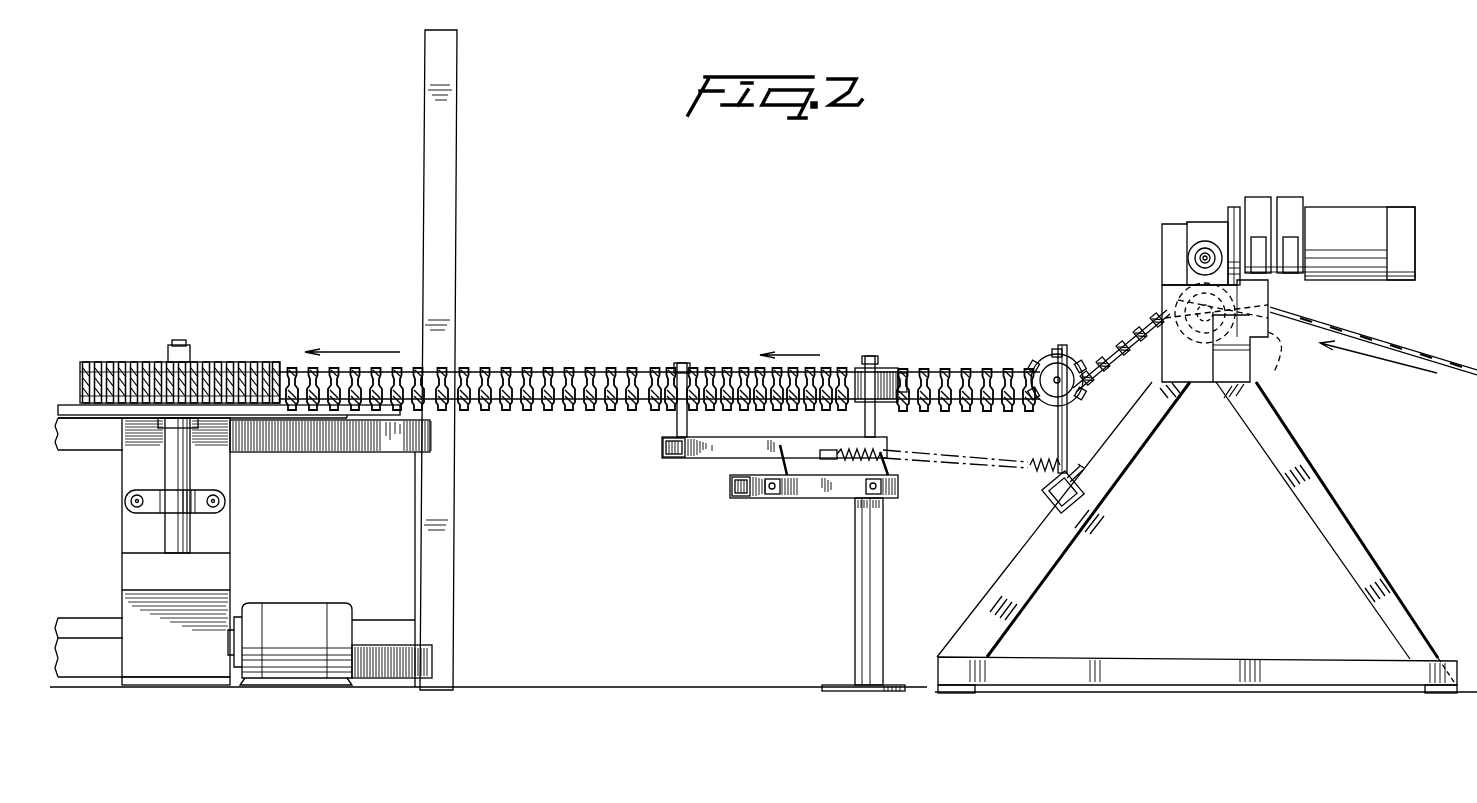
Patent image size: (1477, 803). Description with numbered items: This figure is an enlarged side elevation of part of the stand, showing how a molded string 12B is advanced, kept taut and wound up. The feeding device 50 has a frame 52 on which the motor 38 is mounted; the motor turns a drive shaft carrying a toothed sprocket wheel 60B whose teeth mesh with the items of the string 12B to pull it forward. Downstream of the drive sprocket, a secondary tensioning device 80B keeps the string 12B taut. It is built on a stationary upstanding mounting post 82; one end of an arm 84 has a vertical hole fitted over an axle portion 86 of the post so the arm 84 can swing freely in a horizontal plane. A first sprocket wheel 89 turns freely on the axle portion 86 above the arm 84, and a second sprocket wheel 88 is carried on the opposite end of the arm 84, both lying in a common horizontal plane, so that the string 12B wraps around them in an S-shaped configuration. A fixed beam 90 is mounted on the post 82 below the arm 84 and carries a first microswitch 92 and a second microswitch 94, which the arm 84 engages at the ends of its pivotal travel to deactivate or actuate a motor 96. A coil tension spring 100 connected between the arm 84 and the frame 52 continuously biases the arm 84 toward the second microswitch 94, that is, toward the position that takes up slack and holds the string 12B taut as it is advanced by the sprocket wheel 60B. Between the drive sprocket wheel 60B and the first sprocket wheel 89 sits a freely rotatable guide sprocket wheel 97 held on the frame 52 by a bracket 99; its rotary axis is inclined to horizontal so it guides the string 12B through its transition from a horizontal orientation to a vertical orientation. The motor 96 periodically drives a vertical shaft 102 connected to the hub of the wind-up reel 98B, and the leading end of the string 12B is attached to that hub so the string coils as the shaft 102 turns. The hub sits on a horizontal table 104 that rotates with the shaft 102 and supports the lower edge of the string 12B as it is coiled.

The string 12B is at (572, 347).
The motor 38 is at (1350, 218).
The feeding device 50 is at (1221, 291).
The frame 52 is at (1055, 560).
The sprocket wheel 60B is at (1282, 357).
The secondary tensioning device 80B is at (840, 422).
The mounting post 82 is at (862, 604).
The arm 84 is at (703, 462).
The axle portion 86 is at (865, 362).
The second sprocket wheel 88 is at (692, 368).
The first sprocket wheel 89 is at (882, 368).
The beam 90 is at (683, 362).
The first microswitch 92 is at (768, 513).
The second microswitch 94 is at (910, 491).
The motor 96 is at (345, 612).
The guide sprocket wheel 97 is at (1070, 347).
The wind-up reel 98B is at (236, 345).
The bracket 99 is at (1068, 425).
The coil tension spring 100 is at (878, 450).
The vertical shaft 102 is at (178, 528).
The table 104 is at (328, 416).